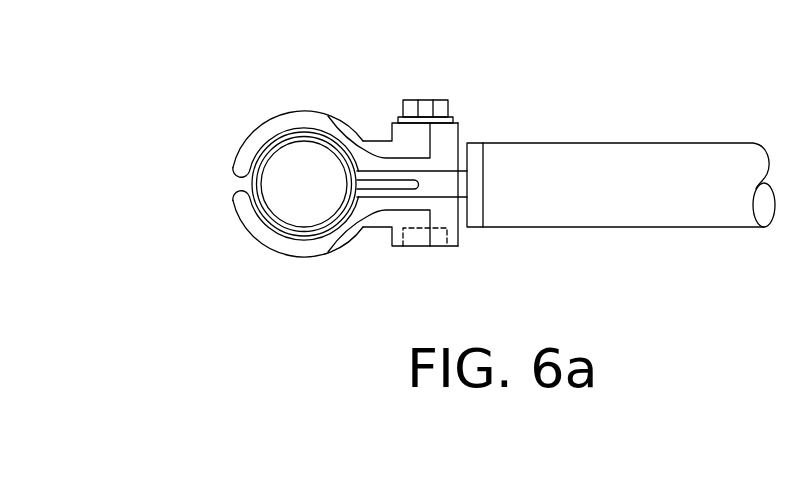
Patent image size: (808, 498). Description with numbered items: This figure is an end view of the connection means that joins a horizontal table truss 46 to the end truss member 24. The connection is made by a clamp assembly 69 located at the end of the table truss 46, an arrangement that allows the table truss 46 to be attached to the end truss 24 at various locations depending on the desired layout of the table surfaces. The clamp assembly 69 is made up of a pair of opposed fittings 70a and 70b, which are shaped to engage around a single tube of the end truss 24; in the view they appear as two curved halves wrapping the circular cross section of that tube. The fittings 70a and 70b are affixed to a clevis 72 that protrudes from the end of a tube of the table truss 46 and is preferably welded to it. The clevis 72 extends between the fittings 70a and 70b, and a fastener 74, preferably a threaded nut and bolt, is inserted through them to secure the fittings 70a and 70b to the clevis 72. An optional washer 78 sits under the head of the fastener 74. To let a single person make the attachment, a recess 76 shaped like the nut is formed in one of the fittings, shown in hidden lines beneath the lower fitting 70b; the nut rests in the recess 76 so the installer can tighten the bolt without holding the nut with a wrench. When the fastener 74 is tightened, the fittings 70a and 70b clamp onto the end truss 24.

The clamp assembly 69 is at (205, 229).
The fitting 70a is at (282, 110).
The fitting 70b is at (250, 230).
The end truss member 24 is at (318, 133).
The fastener 74 is at (422, 100).
The washer 78 is at (458, 117).
The recess 76 is at (440, 255).
The clevis 72 is at (477, 148).
The horizontal table truss 46 is at (603, 150).